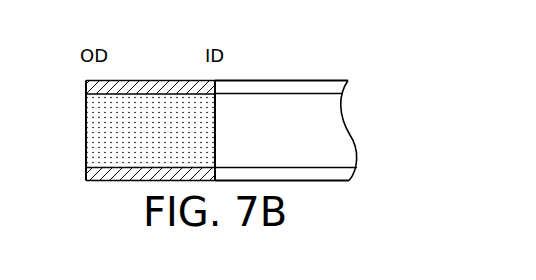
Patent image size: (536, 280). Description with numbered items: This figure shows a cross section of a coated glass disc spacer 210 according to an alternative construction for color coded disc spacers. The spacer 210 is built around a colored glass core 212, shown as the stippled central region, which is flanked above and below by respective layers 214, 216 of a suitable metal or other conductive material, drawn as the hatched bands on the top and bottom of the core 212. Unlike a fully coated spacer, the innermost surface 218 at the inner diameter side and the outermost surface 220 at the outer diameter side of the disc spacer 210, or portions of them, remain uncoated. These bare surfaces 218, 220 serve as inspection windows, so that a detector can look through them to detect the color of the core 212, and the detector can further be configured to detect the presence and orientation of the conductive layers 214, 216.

The coated glass disc spacer 210 is at (283, 55).
The colored glass core 212 is at (142, 120).
The layer of conductive material 214 is at (167, 80).
The layer of conductive material 216 is at (106, 183).
The innermost surface 218 is at (215, 129).
The outermost surface 220 is at (86, 131).